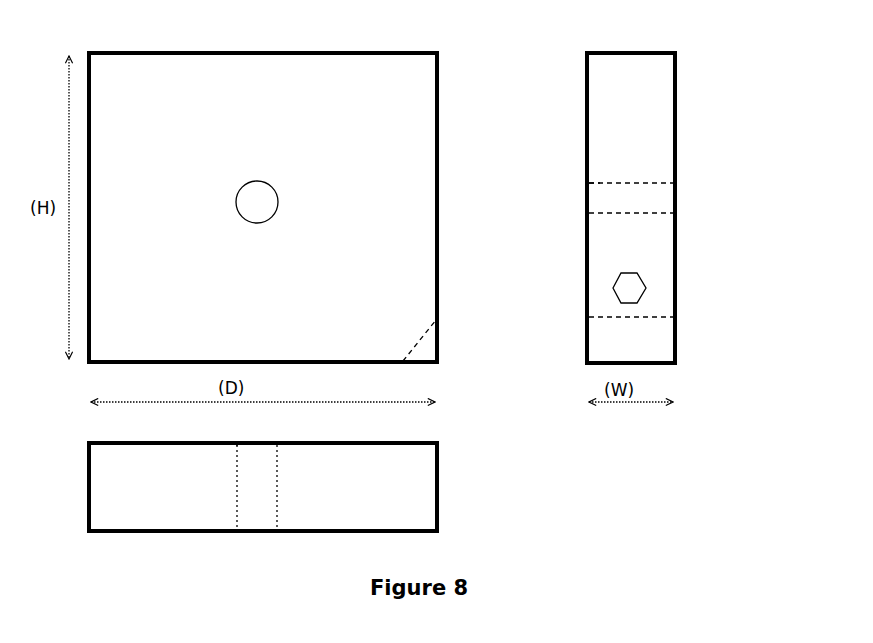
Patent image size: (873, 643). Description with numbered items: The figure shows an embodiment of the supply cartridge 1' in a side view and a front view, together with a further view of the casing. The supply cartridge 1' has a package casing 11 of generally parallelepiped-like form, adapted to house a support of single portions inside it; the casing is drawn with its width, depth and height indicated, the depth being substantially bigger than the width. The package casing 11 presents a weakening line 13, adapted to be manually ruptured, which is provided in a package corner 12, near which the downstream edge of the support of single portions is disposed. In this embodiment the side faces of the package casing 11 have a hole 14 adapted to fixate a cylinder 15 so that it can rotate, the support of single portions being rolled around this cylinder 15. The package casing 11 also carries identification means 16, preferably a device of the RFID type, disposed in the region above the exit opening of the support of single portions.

The supply cartridge 1' is at (330, 40).
The package casing 11 is at (403, 292).
The package corner 12 is at (443, 361).
The weakening line 13 is at (402, 352).
The hole 14 is at (586, 197).
The cylinder 15 is at (412, 332).
The identification means 16 is at (611, 295).